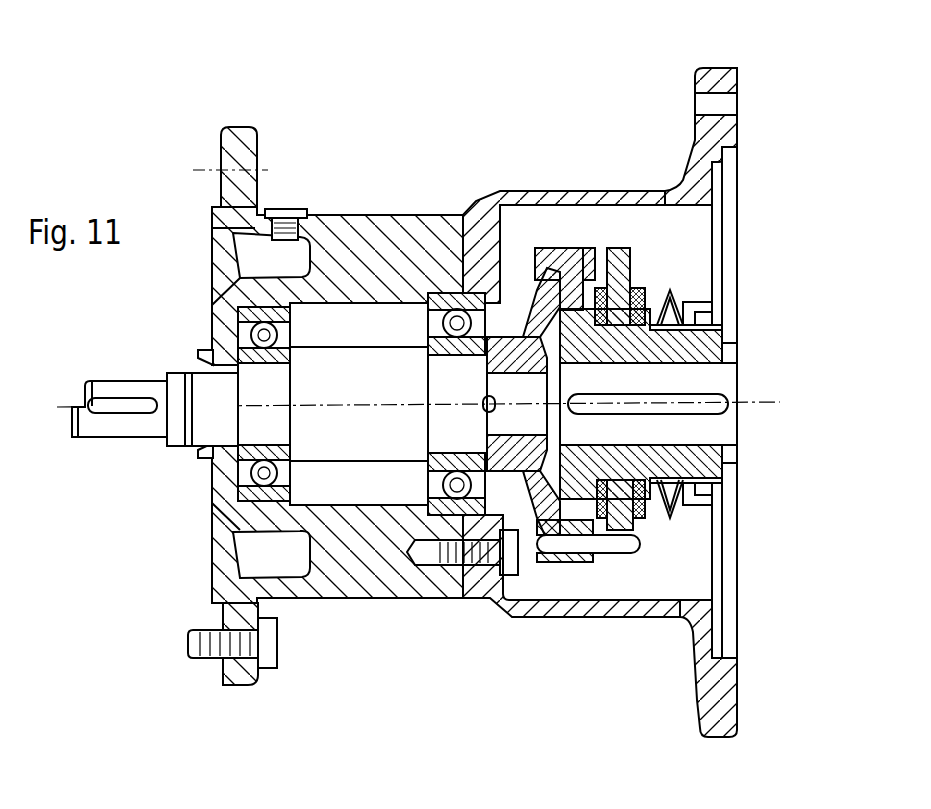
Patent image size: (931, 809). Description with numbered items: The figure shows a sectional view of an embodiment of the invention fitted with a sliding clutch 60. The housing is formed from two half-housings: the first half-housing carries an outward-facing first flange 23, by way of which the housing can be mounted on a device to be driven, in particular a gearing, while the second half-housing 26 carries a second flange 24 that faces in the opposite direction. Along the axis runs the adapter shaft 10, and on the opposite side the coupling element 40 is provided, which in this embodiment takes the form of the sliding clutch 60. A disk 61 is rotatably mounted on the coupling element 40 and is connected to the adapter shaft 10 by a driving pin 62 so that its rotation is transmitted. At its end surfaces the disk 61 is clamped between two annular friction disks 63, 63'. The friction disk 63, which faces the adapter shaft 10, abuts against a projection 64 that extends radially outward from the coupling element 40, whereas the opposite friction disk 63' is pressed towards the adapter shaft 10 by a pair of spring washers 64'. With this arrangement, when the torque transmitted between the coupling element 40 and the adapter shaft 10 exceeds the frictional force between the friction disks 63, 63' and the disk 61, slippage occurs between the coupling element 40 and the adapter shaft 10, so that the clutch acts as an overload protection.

The adapter shaft 10 is at (158, 452).
The first flange 23 is at (212, 140).
The second flange 24 is at (746, 90).
The second half-housing 26 is at (520, 612).
The coupling element 40 is at (748, 368).
The sliding clutch 60 is at (611, 228).
The disk 61 is at (630, 258).
The driving pin 62 is at (560, 540).
The annular friction disk 63 is at (610, 539).
The annular friction disk 63' is at (643, 525).
The projection 64 is at (609, 269).
The spring washers 64' is at (691, 525).